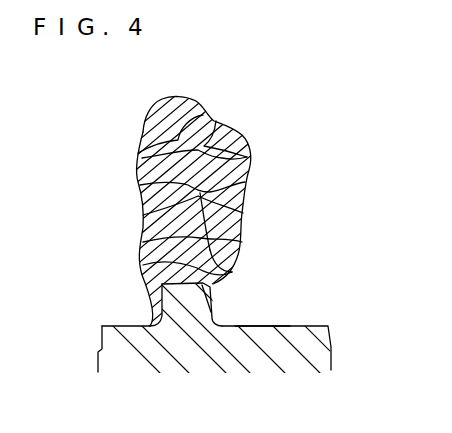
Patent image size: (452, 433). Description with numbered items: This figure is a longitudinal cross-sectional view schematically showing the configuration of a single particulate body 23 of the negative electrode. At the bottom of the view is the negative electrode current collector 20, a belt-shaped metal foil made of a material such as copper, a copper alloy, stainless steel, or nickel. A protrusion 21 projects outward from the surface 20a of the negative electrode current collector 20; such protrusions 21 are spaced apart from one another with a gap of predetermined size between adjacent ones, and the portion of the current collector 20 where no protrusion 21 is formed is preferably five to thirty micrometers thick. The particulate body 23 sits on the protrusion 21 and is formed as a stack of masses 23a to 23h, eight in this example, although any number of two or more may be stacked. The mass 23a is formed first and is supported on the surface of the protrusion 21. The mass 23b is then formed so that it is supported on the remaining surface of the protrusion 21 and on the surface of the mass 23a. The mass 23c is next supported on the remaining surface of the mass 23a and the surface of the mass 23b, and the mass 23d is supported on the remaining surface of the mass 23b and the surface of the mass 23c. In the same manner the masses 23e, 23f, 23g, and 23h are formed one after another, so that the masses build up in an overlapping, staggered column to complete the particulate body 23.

The negative electrode current collector 20 is at (308, 350).
The surface of the negative electrode current collector 20a is at (296, 326).
The protrusion 21 is at (185, 291).
The particulate body 23 is at (325, 59).
The mass 23a is at (235, 268).
The mass 23b is at (240, 241).
The mass 23c is at (235, 216).
The mass 23d is at (243, 186).
The mass 23e is at (235, 162).
The mass 23f is at (240, 140).
The mass 23g is at (215, 121).
The mass 23h is at (198, 105).